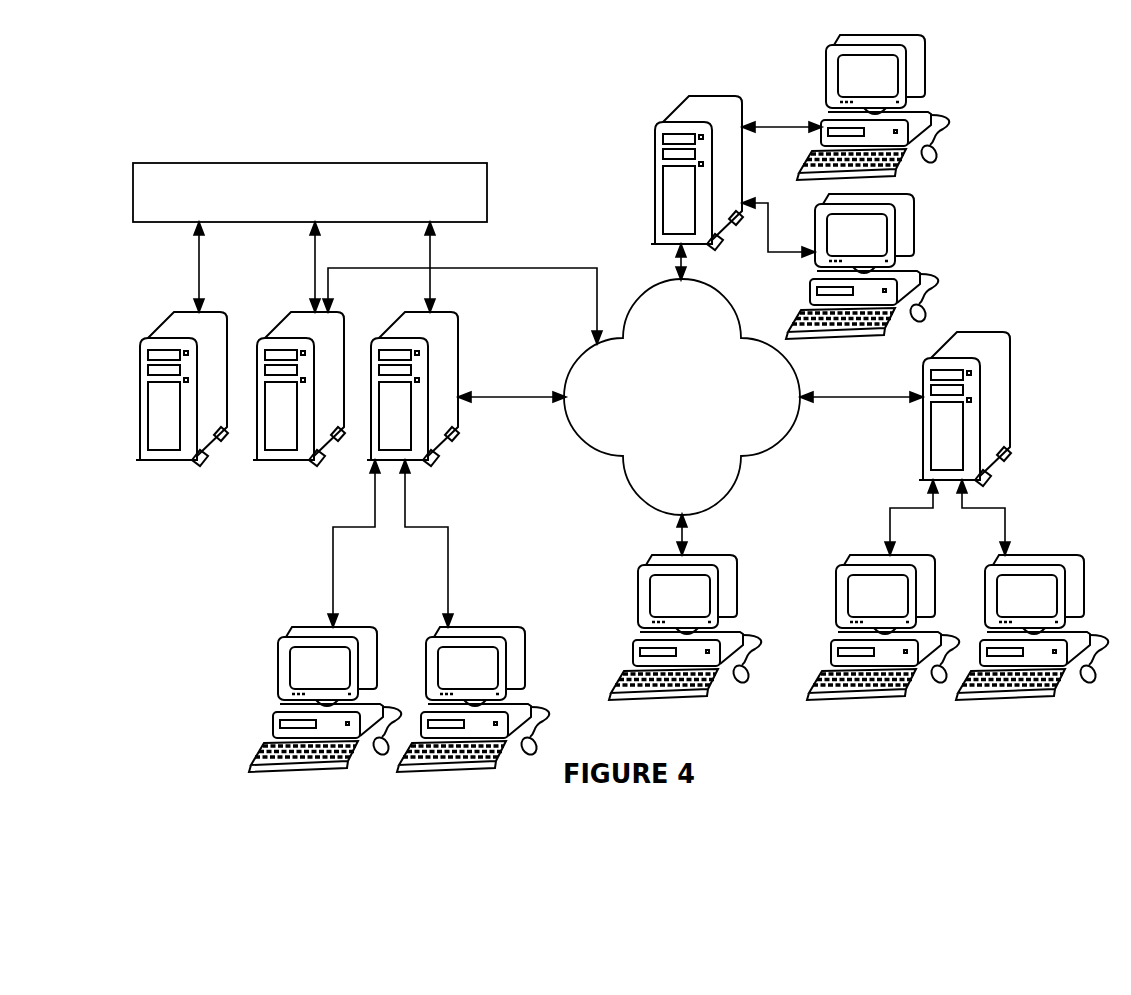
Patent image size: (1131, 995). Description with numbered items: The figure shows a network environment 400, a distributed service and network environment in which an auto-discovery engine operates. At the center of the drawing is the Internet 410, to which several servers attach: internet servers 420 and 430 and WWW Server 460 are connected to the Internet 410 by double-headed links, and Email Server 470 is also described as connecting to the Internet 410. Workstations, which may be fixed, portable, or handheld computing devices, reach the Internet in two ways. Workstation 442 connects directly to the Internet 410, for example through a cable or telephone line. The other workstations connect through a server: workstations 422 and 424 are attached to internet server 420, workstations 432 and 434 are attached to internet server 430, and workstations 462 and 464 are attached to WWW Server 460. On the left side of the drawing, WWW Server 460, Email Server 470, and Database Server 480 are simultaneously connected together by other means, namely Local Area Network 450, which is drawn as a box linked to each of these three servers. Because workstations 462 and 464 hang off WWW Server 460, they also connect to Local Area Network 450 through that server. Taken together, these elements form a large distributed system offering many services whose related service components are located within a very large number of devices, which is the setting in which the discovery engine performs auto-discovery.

The network environment 400 is at (968, 120).
The Internet 410 is at (682, 397).
The internet server 420 is at (657, 173).
The workstation 422 is at (873, 107).
The workstation 424 is at (862, 266).
The internet server 430 is at (1009, 409).
The workstation 432 is at (883, 627).
The workstation 434 is at (1032, 627).
The workstation 442 is at (685, 627).
The Local Area Network 450 is at (310, 192).
The WWW Server 460 is at (435, 415).
The workstation 462 is at (325, 699).
The workstation 464 is at (473, 699).
The Email Server 470 is at (299, 430).
The Database Server 480 is at (178, 430).